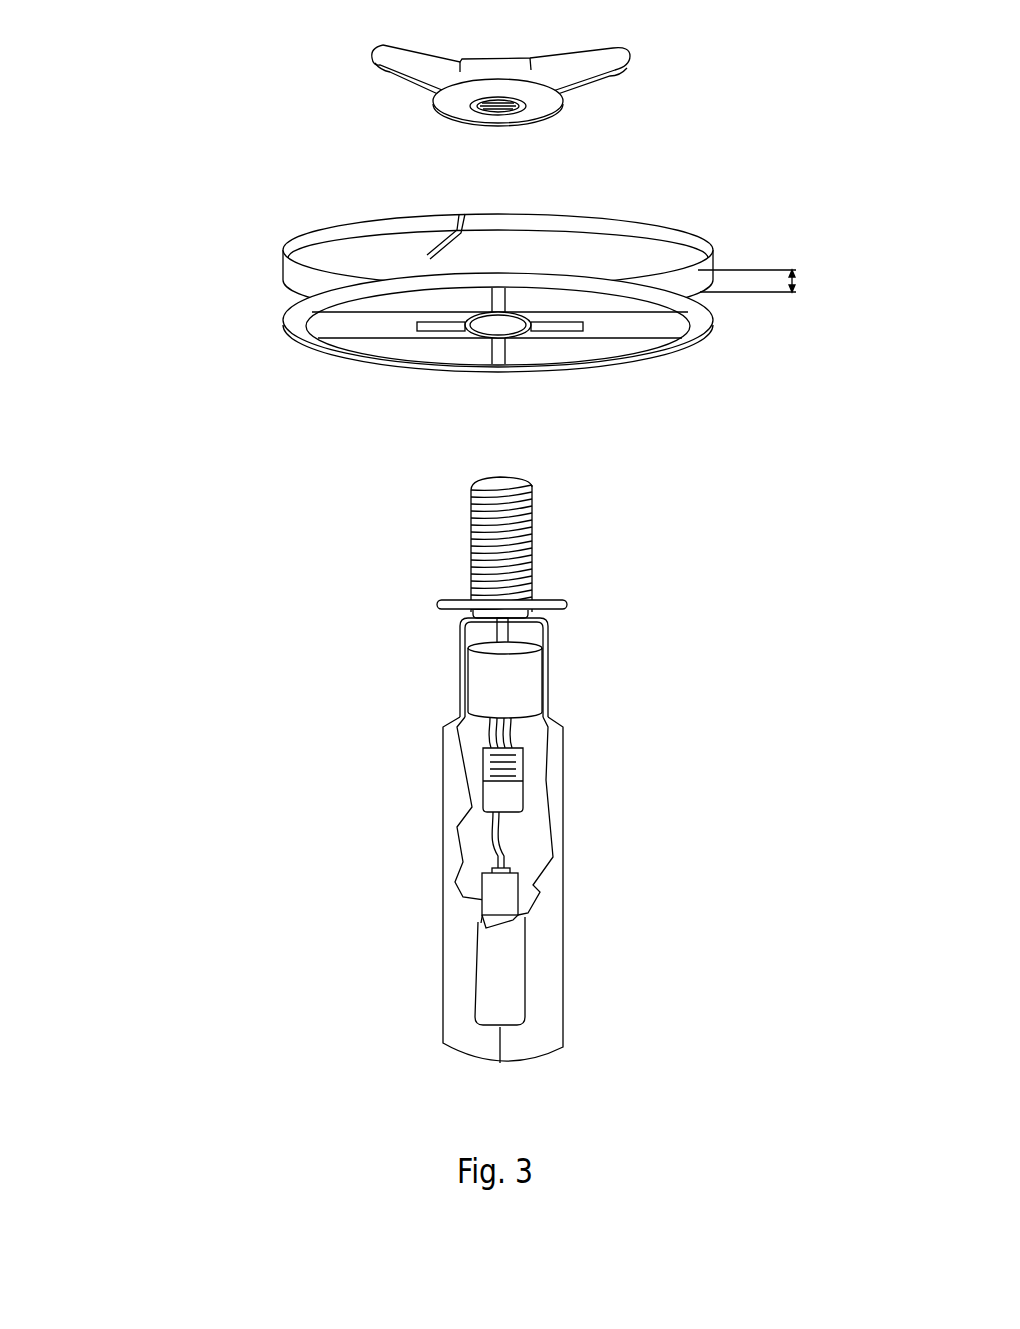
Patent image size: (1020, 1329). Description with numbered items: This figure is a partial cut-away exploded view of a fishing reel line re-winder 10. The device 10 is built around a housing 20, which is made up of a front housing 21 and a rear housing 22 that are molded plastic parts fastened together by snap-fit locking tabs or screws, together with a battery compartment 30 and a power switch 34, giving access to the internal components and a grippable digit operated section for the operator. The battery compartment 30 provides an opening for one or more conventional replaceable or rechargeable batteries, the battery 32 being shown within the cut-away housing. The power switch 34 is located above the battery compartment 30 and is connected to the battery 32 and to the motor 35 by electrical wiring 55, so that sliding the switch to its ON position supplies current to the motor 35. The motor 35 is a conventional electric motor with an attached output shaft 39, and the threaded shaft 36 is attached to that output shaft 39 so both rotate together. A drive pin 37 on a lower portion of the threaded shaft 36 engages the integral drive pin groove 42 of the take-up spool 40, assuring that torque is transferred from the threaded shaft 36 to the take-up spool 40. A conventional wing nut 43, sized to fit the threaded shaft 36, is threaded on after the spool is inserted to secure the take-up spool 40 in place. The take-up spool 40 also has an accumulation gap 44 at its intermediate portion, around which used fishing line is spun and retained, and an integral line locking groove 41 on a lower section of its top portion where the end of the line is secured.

The fishing reel line re-winder 10 is at (836, 138).
The housing 20 is at (518, 898).
The front housing 21 is at (563, 990).
The rear housing 22 is at (442, 1004).
The battery compartment 30 is at (478, 922).
The battery 32 is at (497, 892).
The power switch 34 is at (483, 750).
The motor 35 is at (525, 686).
The threaded shaft 36 is at (470, 530).
The drive pin 37 is at (567, 606).
The output shaft 39 is at (500, 632).
The take-up spool 40 is at (377, 243).
The line locking groove 41 is at (432, 252).
The drive pin groove 42 is at (420, 330).
The wing nut 43 is at (372, 62).
The accumulation gap 44 is at (798, 281).
The electrical wiring 55 is at (500, 855).